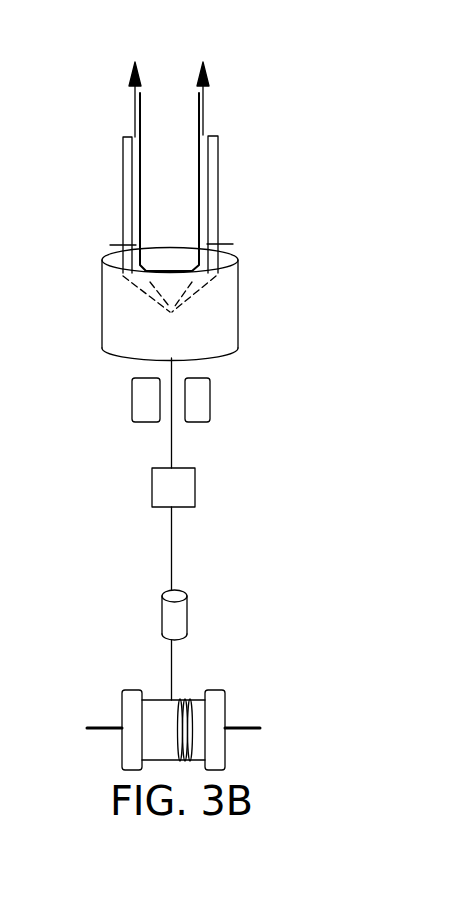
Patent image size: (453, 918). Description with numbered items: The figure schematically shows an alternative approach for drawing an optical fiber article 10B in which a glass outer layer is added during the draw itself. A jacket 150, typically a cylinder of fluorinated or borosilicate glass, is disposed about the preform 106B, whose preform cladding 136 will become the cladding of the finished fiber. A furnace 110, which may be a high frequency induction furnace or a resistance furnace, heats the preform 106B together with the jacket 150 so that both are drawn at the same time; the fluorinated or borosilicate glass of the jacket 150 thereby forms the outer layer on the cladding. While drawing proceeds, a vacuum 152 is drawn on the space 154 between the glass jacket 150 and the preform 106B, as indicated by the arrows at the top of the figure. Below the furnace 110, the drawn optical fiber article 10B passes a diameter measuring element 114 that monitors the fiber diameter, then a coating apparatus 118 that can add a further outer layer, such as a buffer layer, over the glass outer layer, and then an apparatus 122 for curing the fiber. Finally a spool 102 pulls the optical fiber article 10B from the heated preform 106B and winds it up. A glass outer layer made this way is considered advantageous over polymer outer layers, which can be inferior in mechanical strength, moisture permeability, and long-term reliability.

The optical fiber article 10B is at (143, 669).
The spool 102 is at (217, 712).
The preform 106B is at (232, 173).
The furnace 110 is at (222, 300).
The diameter measuring element 114 is at (200, 404).
The coating apparatus 118 is at (188, 487).
The curing apparatus 122 is at (178, 618).
The preform cladding 136 is at (153, 177).
The jacket 150 is at (213, 227).
The vacuum 152 is at (205, 112).
The space 154 is at (137, 227).